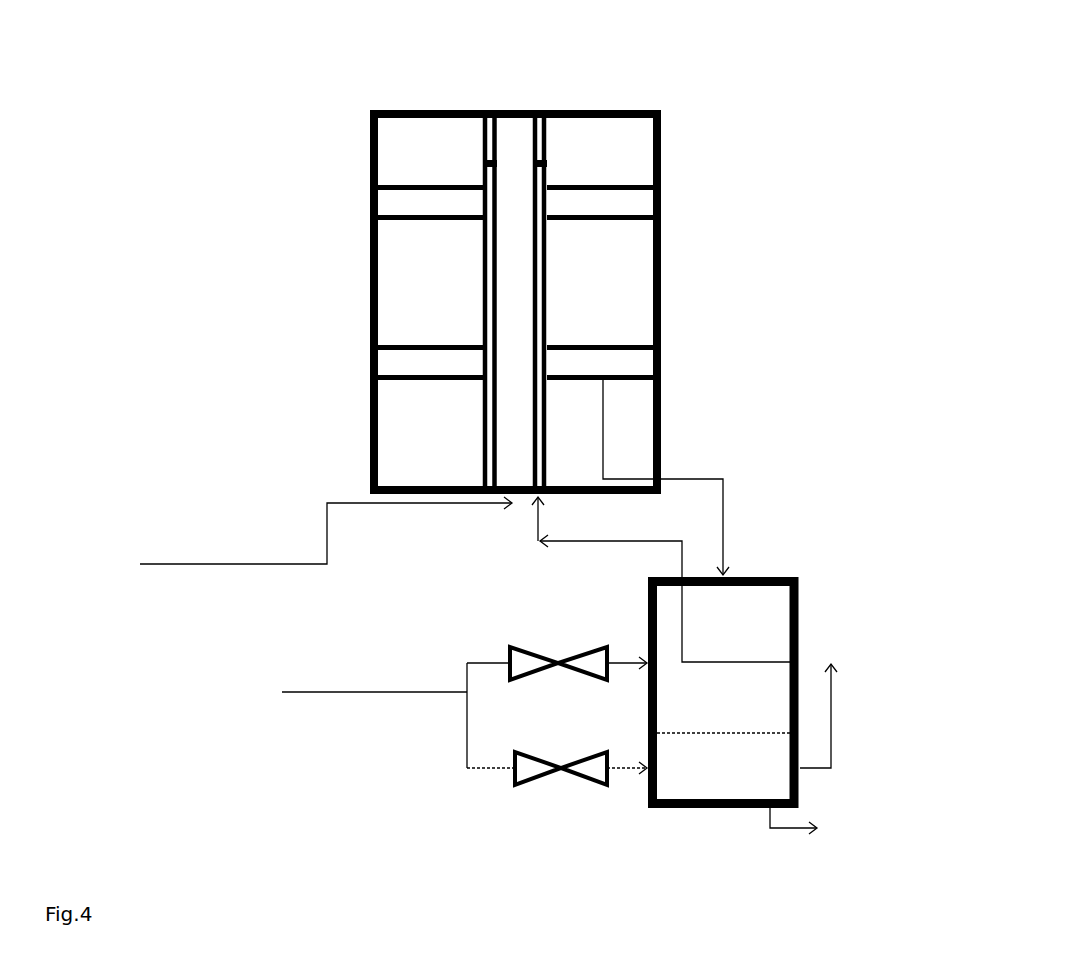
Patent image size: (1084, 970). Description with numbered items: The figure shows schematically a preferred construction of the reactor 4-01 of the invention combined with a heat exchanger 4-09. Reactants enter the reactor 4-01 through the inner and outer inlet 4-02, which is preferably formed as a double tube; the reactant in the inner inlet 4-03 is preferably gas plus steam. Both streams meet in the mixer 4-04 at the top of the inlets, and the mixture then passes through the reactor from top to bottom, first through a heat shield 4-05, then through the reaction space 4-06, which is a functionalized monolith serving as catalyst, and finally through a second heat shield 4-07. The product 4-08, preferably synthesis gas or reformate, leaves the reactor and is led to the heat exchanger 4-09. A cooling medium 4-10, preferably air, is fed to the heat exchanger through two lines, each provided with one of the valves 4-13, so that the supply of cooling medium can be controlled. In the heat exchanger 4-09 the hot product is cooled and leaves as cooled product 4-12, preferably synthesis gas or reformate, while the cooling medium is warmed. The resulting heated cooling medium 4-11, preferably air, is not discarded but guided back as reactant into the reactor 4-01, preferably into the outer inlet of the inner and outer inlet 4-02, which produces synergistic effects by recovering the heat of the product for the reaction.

The reactor 4-01 is at (438, 149).
The inner and outer inlet 4-02 is at (483, 267).
The reactant in inner inlet 4-03 is at (281, 538).
The mixer 4-04 is at (490, 148).
The heat shield 4-05 is at (608, 205).
The reaction space 4-06 is at (622, 286).
The heat shield 4-07 is at (615, 361).
The product 4-08 is at (740, 487).
The heat exchanger 4-09 is at (630, 612).
The cooling medium 4-10 is at (426, 715).
The heated cooling medium 4-11 is at (677, 542).
The cooled product 4-12 is at (851, 826).
The valves 4-13 is at (517, 682).